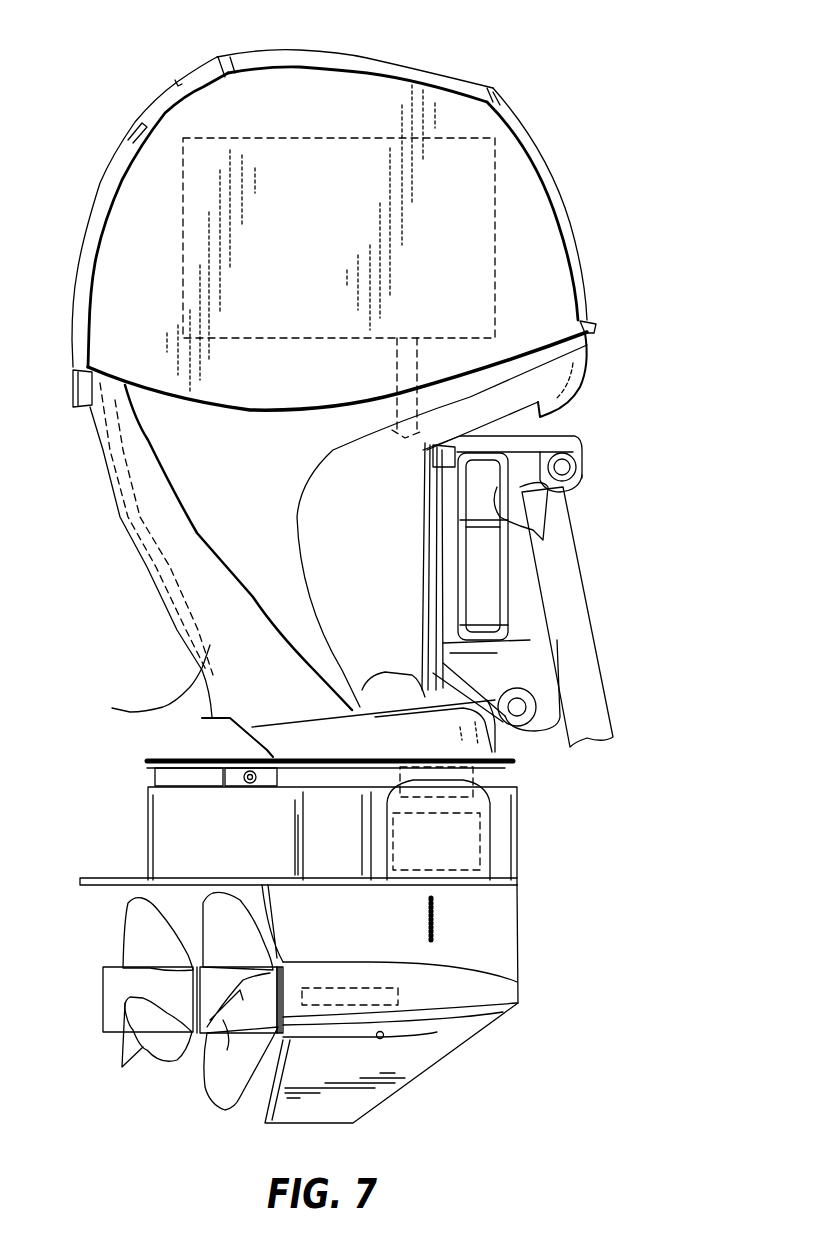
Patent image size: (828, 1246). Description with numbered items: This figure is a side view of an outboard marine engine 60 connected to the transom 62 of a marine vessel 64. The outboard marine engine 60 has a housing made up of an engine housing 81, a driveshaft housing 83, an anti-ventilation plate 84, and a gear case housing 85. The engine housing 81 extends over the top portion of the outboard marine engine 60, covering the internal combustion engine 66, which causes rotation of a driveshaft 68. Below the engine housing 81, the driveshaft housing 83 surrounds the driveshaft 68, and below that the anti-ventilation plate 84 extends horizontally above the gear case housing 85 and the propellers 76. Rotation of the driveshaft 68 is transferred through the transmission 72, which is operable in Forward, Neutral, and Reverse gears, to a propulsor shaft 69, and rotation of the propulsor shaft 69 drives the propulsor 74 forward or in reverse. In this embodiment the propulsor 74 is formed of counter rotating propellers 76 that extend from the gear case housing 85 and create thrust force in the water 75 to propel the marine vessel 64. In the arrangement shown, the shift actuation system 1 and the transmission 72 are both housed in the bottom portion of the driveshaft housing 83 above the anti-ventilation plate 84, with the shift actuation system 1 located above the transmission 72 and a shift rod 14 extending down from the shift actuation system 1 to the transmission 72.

The outboard marine engine 60 is at (376, 569).
The engine housing 81 is at (334, 212).
The internal combustion engine 66 is at (379, 239).
The driveshaft 68 is at (516, 390).
The driveshaft housing 83 is at (330, 574).
The marine vessel 64 is at (544, 591).
The transom 62 is at (578, 617).
The shift rod 14 is at (371, 821).
The transmission 72 is at (492, 841).
The shift actuation system 1 is at (485, 777).
The water 75 is at (331, 968).
The anti-ventilation plate 84 is at (341, 892).
The gear case housing 85 is at (325, 964).
The propulsor shaft 69 is at (232, 905).
The propulsor 74 is at (162, 1011).
The counter rotating propellers 76 is at (162, 1011).